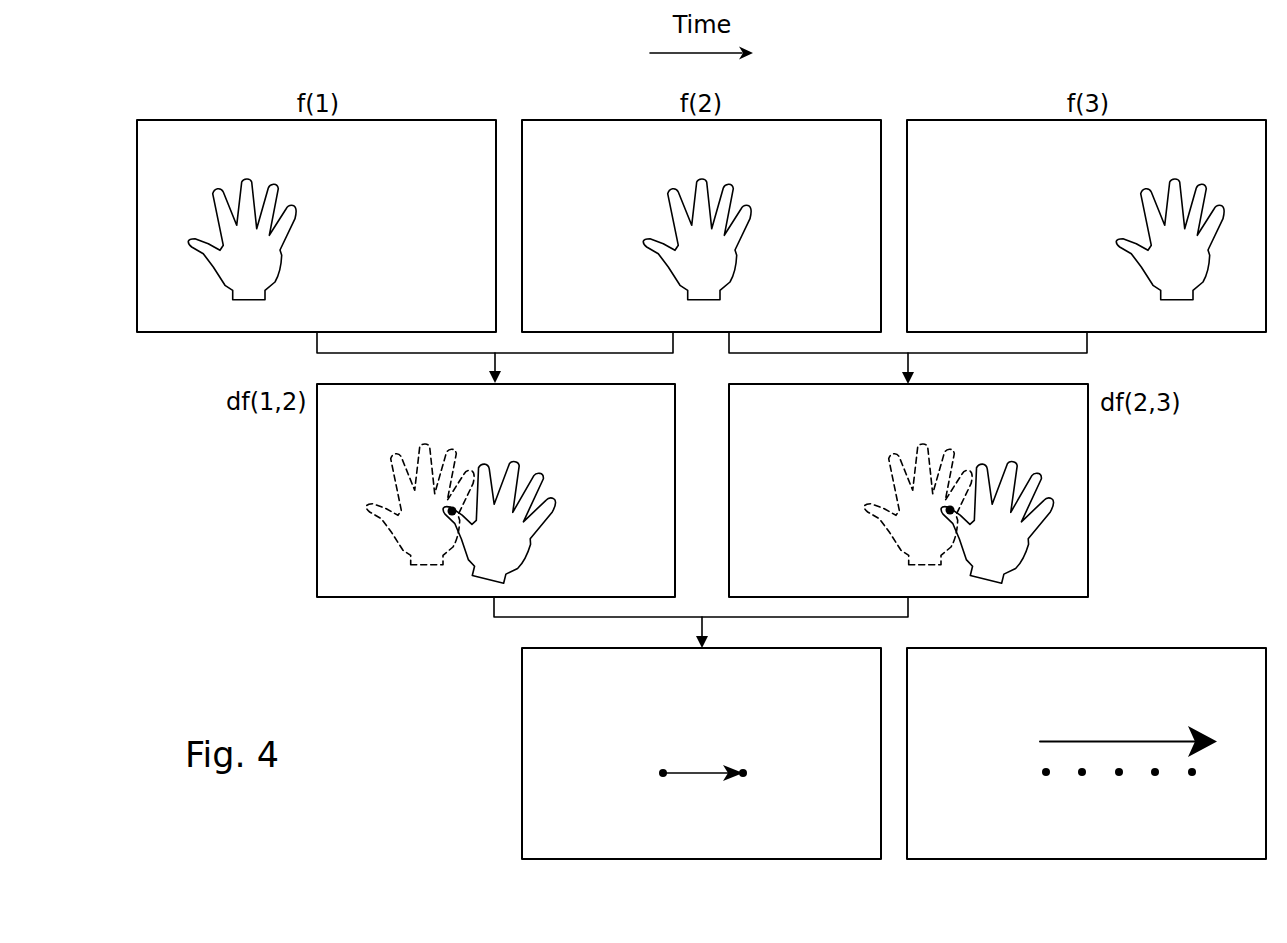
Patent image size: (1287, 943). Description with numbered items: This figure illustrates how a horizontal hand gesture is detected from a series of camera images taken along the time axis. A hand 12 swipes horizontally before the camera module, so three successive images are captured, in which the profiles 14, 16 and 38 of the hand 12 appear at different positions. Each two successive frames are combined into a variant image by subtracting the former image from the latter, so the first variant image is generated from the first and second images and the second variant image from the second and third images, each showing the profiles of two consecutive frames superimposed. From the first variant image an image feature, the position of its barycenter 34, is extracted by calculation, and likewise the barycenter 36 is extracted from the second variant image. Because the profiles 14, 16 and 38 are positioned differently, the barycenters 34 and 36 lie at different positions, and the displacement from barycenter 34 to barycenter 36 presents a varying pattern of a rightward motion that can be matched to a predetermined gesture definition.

The hand 12 is at (1002, 468).
The profile of the hand in image f(1) 14 is at (280, 262).
The profile of the hand in image f(2) 16 is at (735, 263).
The profile of the hand in image f(3) 38 is at (1140, 270).
The barycenter of variant image df(1,2) 34 is at (456, 507).
The barycenter of variant image df(2,3) 36 is at (948, 510).